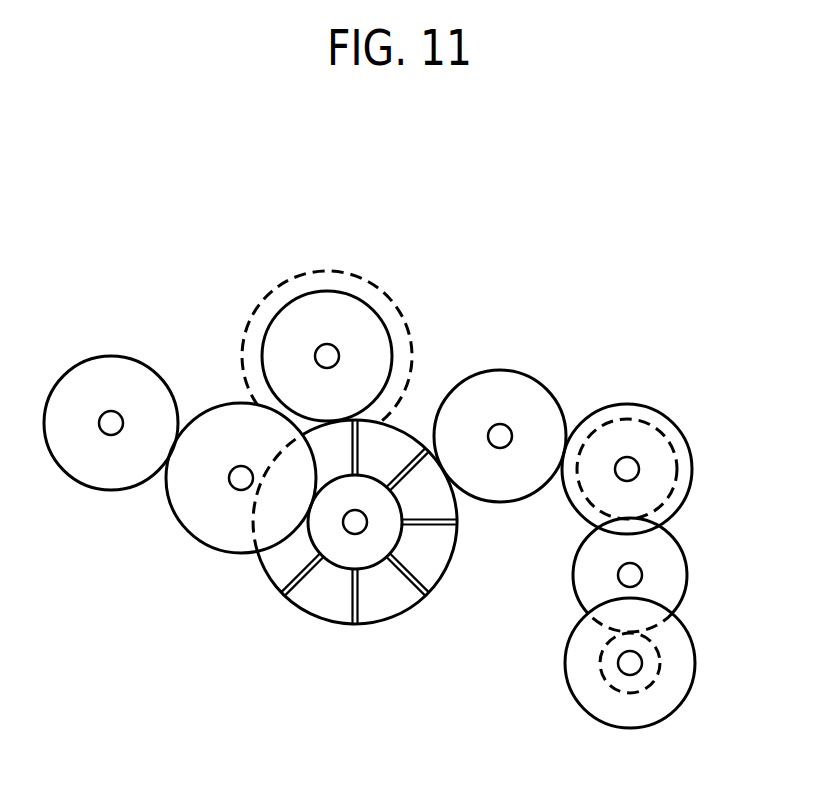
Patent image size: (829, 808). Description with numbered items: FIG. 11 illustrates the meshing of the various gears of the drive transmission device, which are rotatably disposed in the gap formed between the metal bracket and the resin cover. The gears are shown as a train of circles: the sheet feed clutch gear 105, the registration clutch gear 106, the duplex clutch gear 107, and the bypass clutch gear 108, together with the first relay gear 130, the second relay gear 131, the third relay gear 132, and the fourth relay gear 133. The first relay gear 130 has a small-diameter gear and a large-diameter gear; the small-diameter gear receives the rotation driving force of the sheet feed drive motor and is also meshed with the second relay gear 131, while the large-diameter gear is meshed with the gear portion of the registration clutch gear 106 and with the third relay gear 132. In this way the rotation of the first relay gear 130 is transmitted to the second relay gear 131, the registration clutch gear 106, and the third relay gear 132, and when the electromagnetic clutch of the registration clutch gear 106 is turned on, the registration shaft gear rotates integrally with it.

The sheet feed clutch gear 105 is at (105, 356).
The registration clutch gear 106 is at (337, 293).
The duplex clutch gear 107 is at (625, 405).
The bypass clutch gear 108 is at (695, 670).
The first relay gear 130 is at (407, 615).
The second relay gear 131 is at (222, 553).
The third relay gear 132 is at (498, 370).
The fourth relay gear 133 is at (686, 568).